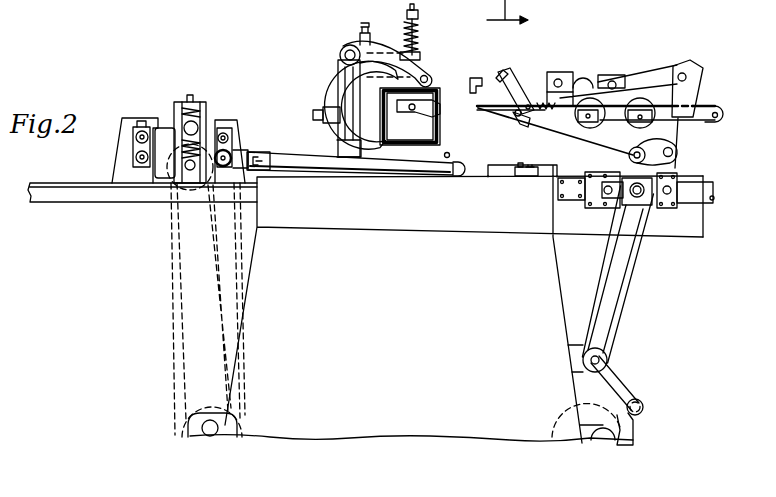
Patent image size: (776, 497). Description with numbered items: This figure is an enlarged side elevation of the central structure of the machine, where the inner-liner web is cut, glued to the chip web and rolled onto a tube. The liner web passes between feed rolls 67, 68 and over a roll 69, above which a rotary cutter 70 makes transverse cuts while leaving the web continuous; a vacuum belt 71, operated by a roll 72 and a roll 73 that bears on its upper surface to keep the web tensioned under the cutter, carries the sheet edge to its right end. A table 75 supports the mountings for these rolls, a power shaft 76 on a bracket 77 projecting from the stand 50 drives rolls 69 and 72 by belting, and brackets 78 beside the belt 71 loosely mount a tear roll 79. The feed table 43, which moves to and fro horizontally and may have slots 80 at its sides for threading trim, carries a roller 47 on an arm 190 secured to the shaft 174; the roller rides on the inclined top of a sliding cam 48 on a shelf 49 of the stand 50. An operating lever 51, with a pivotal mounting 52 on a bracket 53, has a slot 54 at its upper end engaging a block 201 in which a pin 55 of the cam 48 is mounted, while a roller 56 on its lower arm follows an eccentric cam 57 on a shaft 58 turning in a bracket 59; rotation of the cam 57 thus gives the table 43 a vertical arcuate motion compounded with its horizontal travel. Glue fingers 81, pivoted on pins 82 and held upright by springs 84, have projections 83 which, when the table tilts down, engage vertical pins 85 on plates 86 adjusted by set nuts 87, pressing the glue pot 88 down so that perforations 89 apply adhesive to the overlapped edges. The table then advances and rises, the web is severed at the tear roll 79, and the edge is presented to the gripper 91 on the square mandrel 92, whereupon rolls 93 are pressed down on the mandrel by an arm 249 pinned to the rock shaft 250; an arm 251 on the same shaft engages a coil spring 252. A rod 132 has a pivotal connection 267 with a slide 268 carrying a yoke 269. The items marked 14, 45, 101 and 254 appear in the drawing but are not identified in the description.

The section line arrow 14 is at (507, 21).
The feed table 43 is at (720, 118).
The lever 45 is at (700, 93).
The roller 47 is at (629, 155).
The sliding cam 48 is at (680, 163).
The shelf 49 is at (705, 229).
The stand 50 is at (510, 339).
The operating lever 51 is at (625, 297).
The pivotal mounting 52 is at (607, 358).
The bracket 53 is at (577, 344).
The slot 54 is at (660, 185).
The pin 55 is at (646, 210).
The roller 56 is at (644, 405).
The cam 57 is at (635, 437).
The shaft 58 is at (603, 432).
The bracket 59 is at (556, 430).
The feed roll 67 is at (135, 158).
The feed roll 68 is at (142, 132).
The roll 69 is at (192, 170).
The rotary cutter 70 is at (200, 125).
The vacuum belt 71 is at (298, 146).
The roll 72 is at (255, 152).
The roll 73 is at (230, 128).
The table 75 is at (115, 203).
The power shaft 76 is at (225, 428).
The bracket 77 is at (230, 412).
The brackets 78 is at (462, 160).
The tear roll 79 is at (448, 152).
The slots 80 is at (572, 108).
The glue finger 81 is at (516, 84).
The pins 82 is at (516, 115).
The projection 83 is at (527, 127).
The spring 84 is at (552, 112).
The vertical pin 85 is at (520, 164).
The plate 86 is at (525, 177).
The set nut 87 is at (538, 177).
The glue pot 88 is at (503, 70).
The perforations 89 is at (493, 72).
The gripper 91 is at (436, 104).
The mandrel 92 is at (410, 116).
The rolls 93 is at (428, 76).
The bracket 101 is at (482, 88).
The rod 132 is at (318, 113).
The shaft 174 is at (673, 152).
The arm 190 is at (662, 144).
The block 201 is at (615, 196).
The arm 249 is at (372, 46).
The rock shaft 250 is at (349, 49).
The arm 251 is at (420, 56).
The coil spring 252 is at (418, 30).
The bolt 254 is at (418, 13).
The pivotal connection 267 is at (334, 126).
The slide 268 is at (340, 80).
The yoke 269 is at (376, 172).